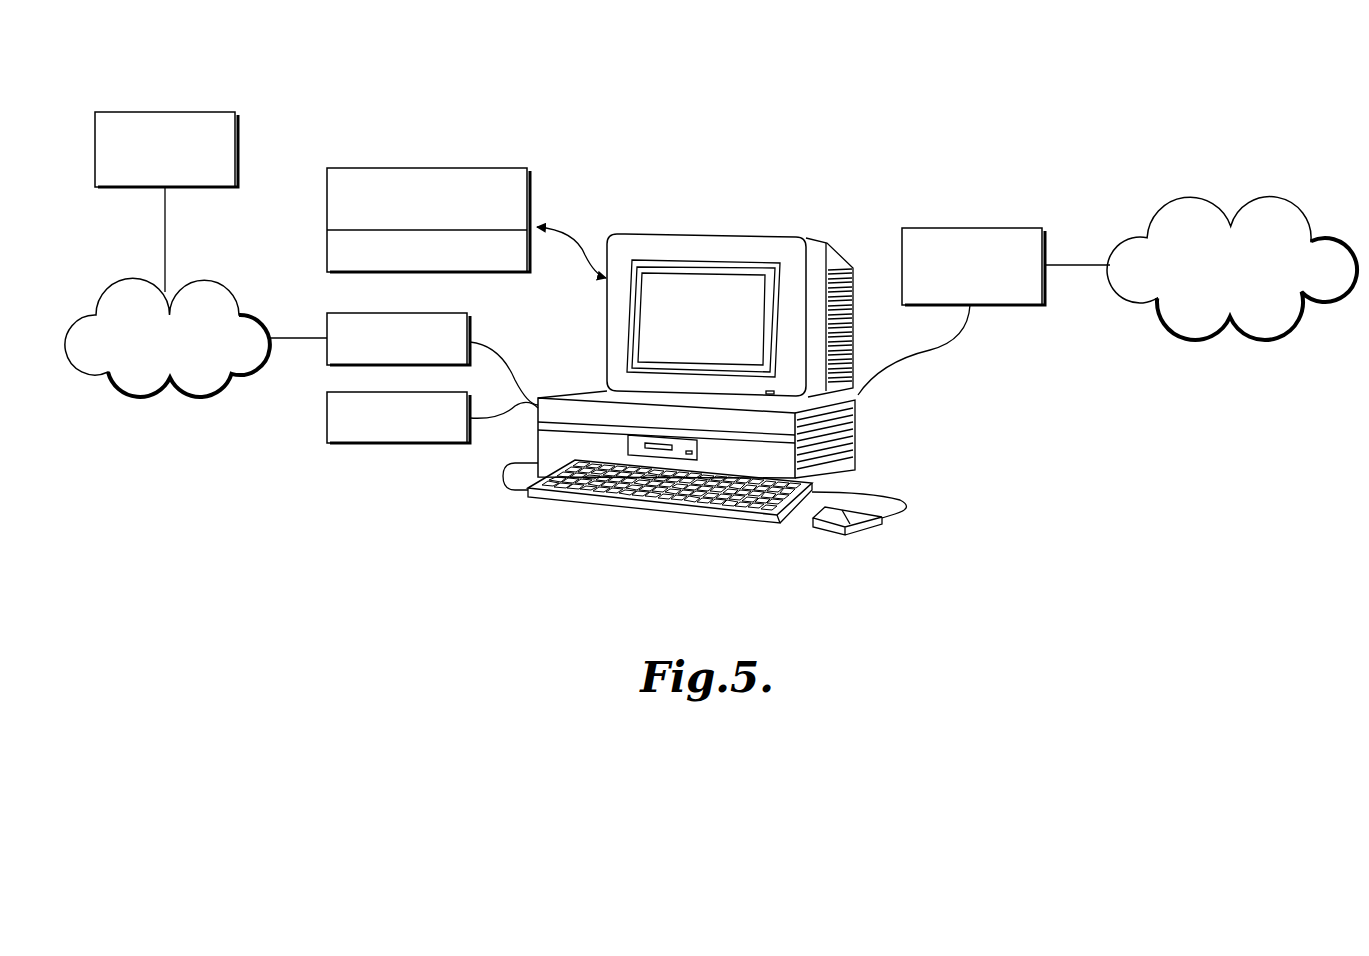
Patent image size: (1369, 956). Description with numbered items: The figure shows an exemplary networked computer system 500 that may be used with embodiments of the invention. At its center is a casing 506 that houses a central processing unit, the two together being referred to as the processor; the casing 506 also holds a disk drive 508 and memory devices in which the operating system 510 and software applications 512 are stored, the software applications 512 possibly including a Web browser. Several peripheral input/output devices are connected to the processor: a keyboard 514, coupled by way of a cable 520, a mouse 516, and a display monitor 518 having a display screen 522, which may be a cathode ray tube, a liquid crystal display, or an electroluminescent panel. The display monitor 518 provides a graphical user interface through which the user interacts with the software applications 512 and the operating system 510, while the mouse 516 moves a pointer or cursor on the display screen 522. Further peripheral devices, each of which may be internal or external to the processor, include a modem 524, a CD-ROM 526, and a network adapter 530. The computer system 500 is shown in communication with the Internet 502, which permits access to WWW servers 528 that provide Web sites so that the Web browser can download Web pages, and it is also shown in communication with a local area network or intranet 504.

The networked computer system 500 is at (851, 192).
The Internet 502 is at (105, 296).
The intranet network 504 is at (1295, 205).
The casing 506 is at (754, 464).
The disk drive 508 is at (662, 452).
The operating system 510 is at (327, 255).
The software applications 512 is at (377, 168).
The keyboard 514 is at (733, 517).
The mouse 516 is at (866, 523).
The display monitor 518 is at (730, 285).
The cable 520 is at (503, 485).
The display screen 522 is at (703, 318).
The modem 524 is at (470, 328).
The CD-ROM 526 is at (327, 419).
The WWW servers 528 is at (148, 112).
The network adapter 530 is at (990, 228).